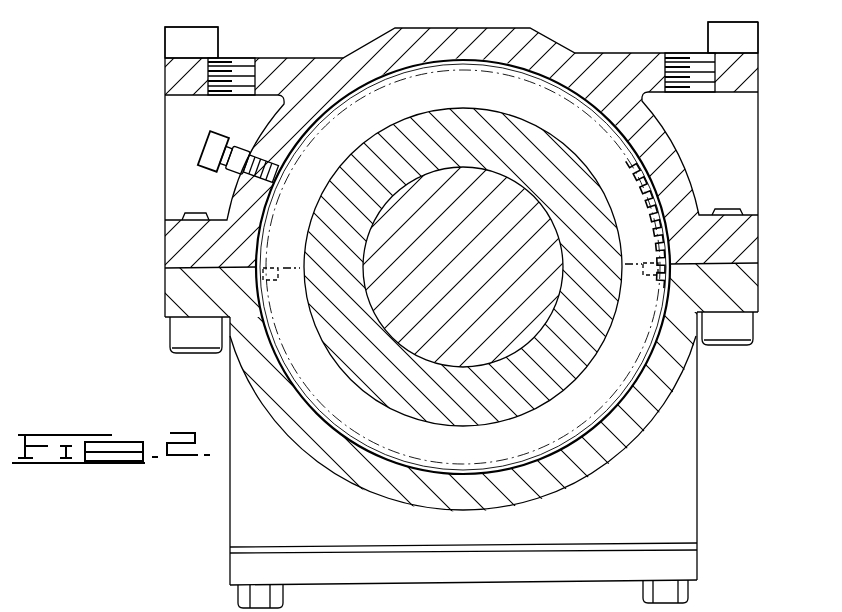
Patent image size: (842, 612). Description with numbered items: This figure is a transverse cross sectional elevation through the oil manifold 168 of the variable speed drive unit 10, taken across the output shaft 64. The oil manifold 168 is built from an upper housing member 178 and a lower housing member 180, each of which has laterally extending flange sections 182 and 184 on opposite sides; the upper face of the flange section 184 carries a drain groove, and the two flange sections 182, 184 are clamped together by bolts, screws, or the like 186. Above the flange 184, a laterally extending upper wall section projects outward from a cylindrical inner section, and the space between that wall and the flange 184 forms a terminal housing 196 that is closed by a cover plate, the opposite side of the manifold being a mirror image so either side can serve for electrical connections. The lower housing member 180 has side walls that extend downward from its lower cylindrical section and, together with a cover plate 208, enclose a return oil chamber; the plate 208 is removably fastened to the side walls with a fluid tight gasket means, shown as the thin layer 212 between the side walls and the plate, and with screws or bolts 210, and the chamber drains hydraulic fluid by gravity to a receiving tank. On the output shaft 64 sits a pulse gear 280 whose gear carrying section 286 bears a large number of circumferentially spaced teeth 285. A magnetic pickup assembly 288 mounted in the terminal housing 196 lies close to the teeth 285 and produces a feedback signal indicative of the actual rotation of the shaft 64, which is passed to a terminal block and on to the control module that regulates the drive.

The variable speed drive unit 10 is at (207, 502).
The output shaft 64 is at (478, 259).
The oil manifold 168 is at (705, 405).
The upper housing member 178 is at (593, 63).
The lower housing member 180 is at (697, 481).
The flange section 182 is at (165, 246).
The flange section 184 is at (165, 292).
The bolts 186 is at (175, 335).
The terminal housing 196 is at (212, 124).
The cover plate 208 is at (697, 568).
The screws 210 is at (690, 596).
The gasket 212 is at (697, 546).
The pulse gear 280 is at (462, 380).
The teeth 285 is at (645, 170).
The gear carrying section 286 is at (662, 245).
The magnetic pickup assembly 288 is at (203, 152).